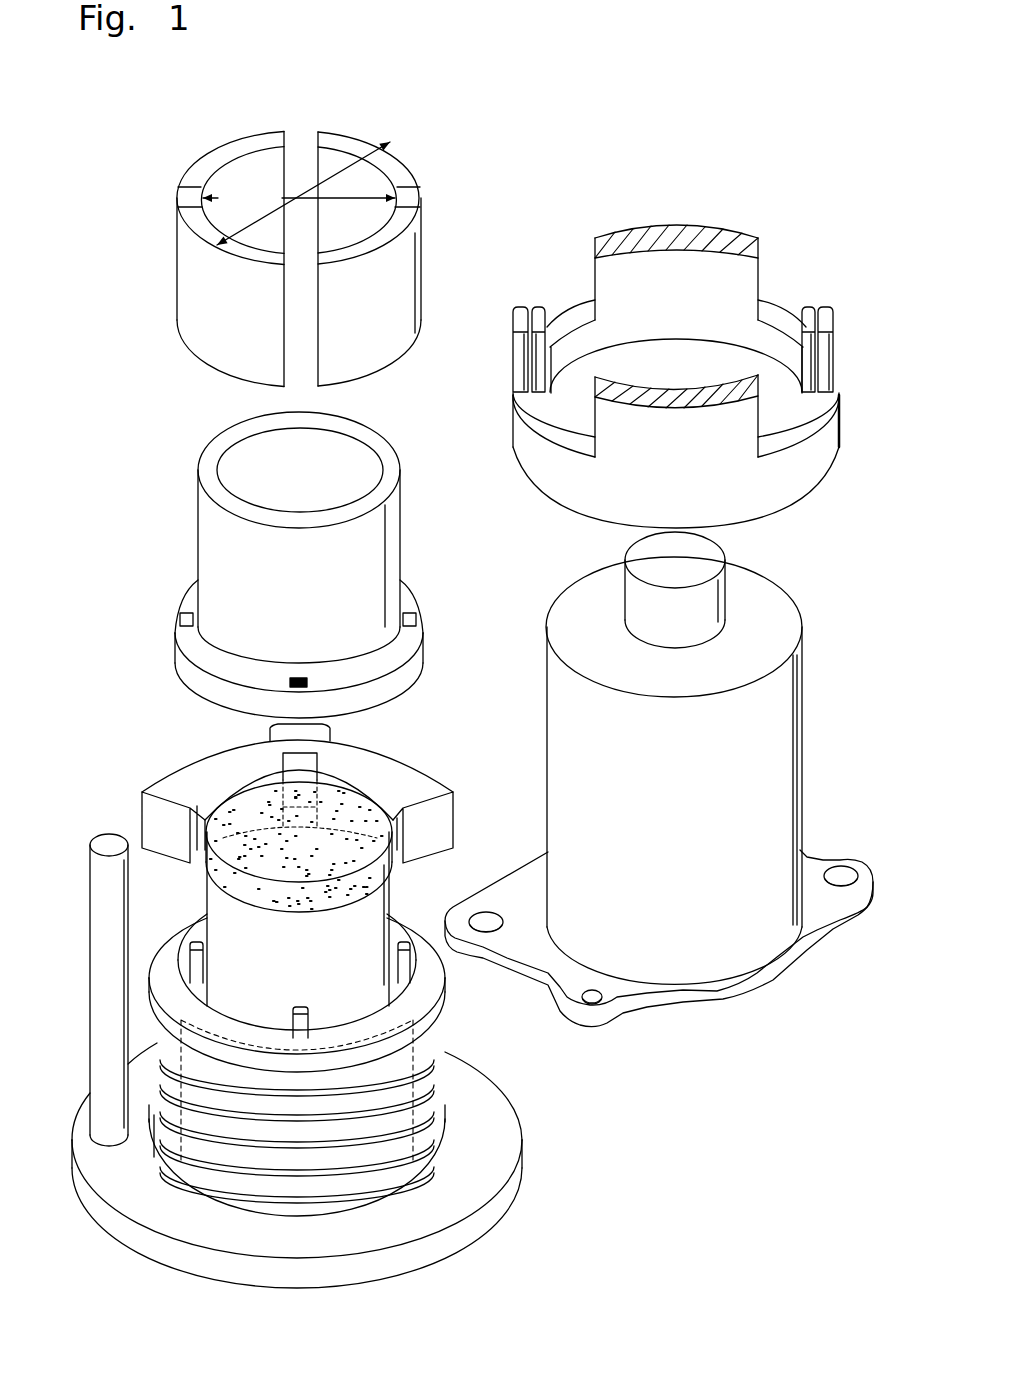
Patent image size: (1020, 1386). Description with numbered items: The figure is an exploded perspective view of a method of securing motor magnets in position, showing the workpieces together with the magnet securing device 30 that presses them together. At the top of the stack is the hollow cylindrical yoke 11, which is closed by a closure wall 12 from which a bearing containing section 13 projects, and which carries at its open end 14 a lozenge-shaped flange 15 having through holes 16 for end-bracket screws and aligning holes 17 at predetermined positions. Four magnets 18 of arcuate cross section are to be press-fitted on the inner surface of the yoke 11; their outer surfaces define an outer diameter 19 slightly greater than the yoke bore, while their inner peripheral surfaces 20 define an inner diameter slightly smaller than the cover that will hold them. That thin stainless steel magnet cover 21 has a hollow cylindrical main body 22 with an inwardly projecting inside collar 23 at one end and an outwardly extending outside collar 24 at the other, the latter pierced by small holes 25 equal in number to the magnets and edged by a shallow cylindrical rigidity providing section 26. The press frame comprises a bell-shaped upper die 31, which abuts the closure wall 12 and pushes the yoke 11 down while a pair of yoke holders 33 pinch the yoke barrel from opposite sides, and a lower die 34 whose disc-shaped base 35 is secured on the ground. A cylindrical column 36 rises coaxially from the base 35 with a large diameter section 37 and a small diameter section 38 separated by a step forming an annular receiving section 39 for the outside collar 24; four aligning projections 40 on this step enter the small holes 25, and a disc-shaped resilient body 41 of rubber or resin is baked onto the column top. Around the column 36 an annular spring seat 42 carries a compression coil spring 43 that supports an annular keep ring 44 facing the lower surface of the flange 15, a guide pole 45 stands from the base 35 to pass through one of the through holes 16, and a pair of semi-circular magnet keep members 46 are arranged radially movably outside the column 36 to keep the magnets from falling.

The yoke 11 is at (659, 798).
The closure wall 12 is at (695, 758).
The bearing containing section 13 is at (707, 607).
The open end 14 is at (659, 926).
The flange 15 is at (808, 927).
The through holes 16 is at (487, 910).
The aligning holes 17 is at (600, 997).
The magnets 18 is at (308, 259).
The outer diameter 19 is at (180, 174).
The inner peripheral surfaces 20 is at (407, 175).
The magnet cover 21 is at (301, 565).
The main body 22 is at (358, 545).
The inside collar 23 is at (387, 456).
The outside collar 24 is at (407, 598).
The small holes 25 is at (180, 620).
The rigidity providing section 26 is at (203, 683).
The magnet securing device 30 is at (674, 354).
The upper die 31 is at (829, 475).
The yoke holders 33 is at (520, 312).
The lower die 34 is at (324, 1166).
The base 35 is at (487, 1100).
The column 36 is at (301, 1077).
The large diameter section 37 is at (385, 1177).
The small diameter section 38 is at (225, 927).
The receiving section 39 is at (197, 1003).
The aligning projections 40 is at (412, 968).
The resilient body 41 is at (362, 810).
The spring seat 42 is at (363, 1160).
The compression coil spring 43 is at (480, 1198).
The keep ring 44 is at (432, 1035).
The guide pole 45 is at (112, 878).
The magnet keep members 46 is at (193, 775).